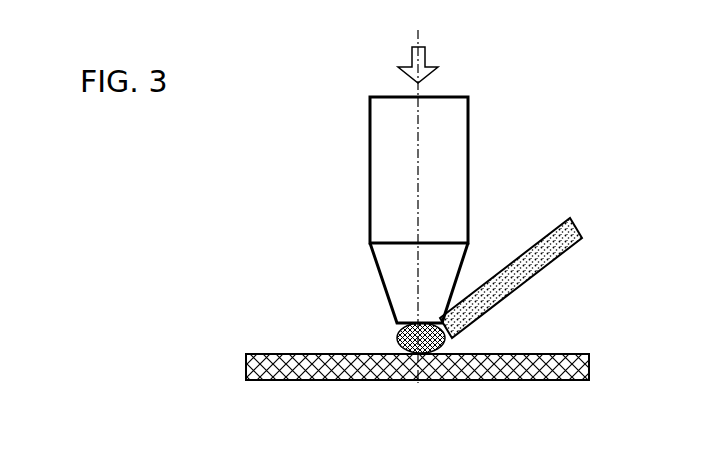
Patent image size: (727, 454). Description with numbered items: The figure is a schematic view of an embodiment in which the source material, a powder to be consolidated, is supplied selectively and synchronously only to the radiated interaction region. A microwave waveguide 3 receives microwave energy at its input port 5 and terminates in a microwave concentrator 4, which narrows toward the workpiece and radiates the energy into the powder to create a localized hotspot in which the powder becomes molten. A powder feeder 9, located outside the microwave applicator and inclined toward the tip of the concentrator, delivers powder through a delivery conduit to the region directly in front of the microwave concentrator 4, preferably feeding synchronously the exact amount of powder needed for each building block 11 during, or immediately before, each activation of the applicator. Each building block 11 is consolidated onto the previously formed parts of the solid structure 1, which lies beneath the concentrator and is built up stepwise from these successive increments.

The solid structure 1 is at (352, 384).
The microwave waveguide 3 is at (368, 196).
The microwave concentrator 4 is at (380, 282).
The input port 5 is at (455, 43).
The powder feeder 9 is at (492, 269).
The building block 11 is at (387, 336).